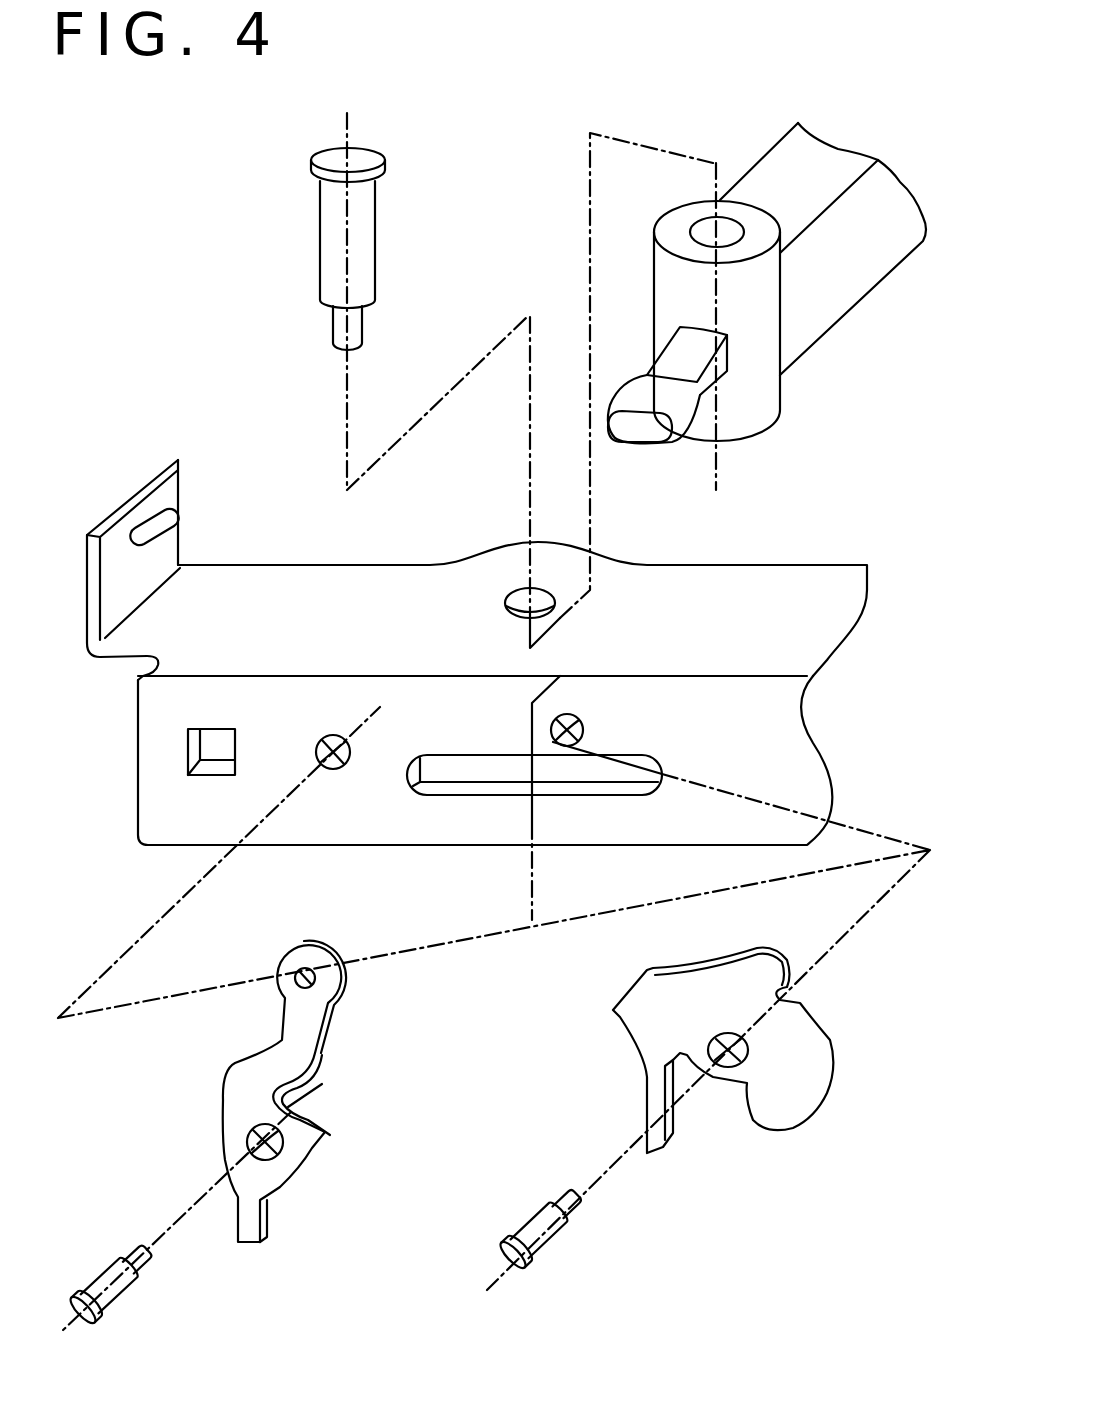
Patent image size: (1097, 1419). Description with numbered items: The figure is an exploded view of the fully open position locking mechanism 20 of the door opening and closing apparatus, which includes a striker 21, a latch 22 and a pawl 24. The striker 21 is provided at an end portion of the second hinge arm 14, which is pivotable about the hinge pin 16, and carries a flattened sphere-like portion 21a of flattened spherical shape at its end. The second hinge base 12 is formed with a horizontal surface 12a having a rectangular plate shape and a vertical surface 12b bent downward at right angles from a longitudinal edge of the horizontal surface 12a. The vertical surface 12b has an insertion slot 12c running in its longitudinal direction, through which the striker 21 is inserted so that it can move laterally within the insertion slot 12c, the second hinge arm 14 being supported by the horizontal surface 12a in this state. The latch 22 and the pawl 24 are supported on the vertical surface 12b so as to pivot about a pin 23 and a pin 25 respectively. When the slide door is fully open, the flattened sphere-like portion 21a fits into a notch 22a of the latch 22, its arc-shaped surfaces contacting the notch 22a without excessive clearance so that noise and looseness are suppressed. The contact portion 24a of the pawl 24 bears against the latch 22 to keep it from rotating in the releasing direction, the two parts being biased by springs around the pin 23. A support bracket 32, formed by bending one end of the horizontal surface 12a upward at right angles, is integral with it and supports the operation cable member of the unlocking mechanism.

The second hinge base 12 is at (514, 654).
The horizontal surface 12a is at (780, 597).
The vertical surface 12b is at (526, 794).
The insertion slot 12c is at (487, 777).
The second hinge arm 14 is at (840, 280).
The hinge pin 16 is at (366, 229).
The fully open position locking mechanism 20 is at (428, 1312).
The striker 21 is at (670, 345).
The flattened sphere-like portion 21a is at (680, 407).
The latch 22 is at (761, 1092).
The notch 22a is at (740, 1095).
The pin 23 is at (547, 1230).
The pawl 24 is at (273, 1091).
The contact portion 24a is at (305, 1098).
The pin 25 is at (122, 1293).
The support bracket 32 is at (157, 497).